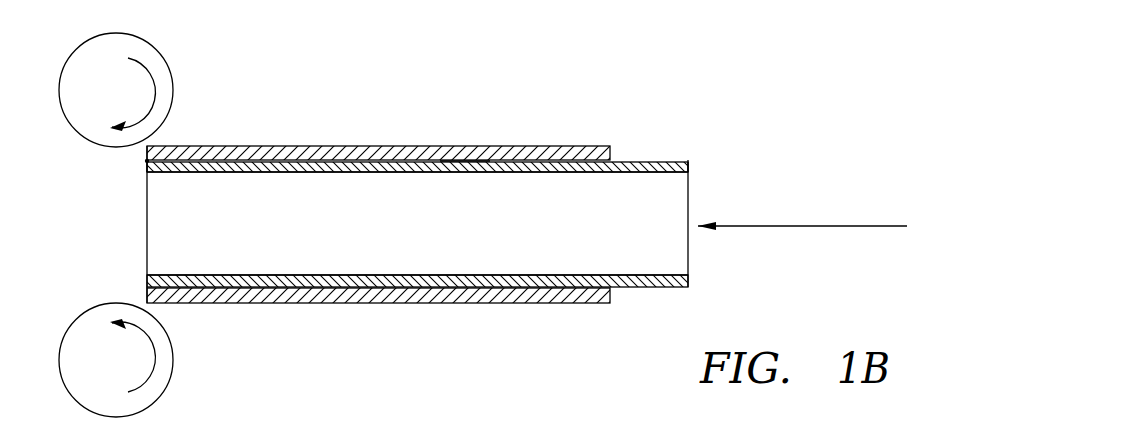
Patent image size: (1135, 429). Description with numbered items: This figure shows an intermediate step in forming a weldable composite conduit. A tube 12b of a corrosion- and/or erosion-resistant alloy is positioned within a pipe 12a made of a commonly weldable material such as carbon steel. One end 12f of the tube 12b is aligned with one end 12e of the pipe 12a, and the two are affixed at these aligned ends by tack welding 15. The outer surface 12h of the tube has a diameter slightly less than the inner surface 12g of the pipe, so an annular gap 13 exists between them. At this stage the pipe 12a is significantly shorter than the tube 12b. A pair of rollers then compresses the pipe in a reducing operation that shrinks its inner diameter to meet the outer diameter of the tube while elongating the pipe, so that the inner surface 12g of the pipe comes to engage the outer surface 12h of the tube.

The annular gap 13 is at (612, 288).
The pipe 12a is at (527, 146).
The tube 12b is at (627, 162).
The end of the pipe 12e is at (147, 158).
The end of the tube 12f is at (147, 168).
The inner surface of the pipe 12g is at (466, 168).
The outer surface of the tube 12h is at (690, 160).
The tack welding 15 is at (147, 283).